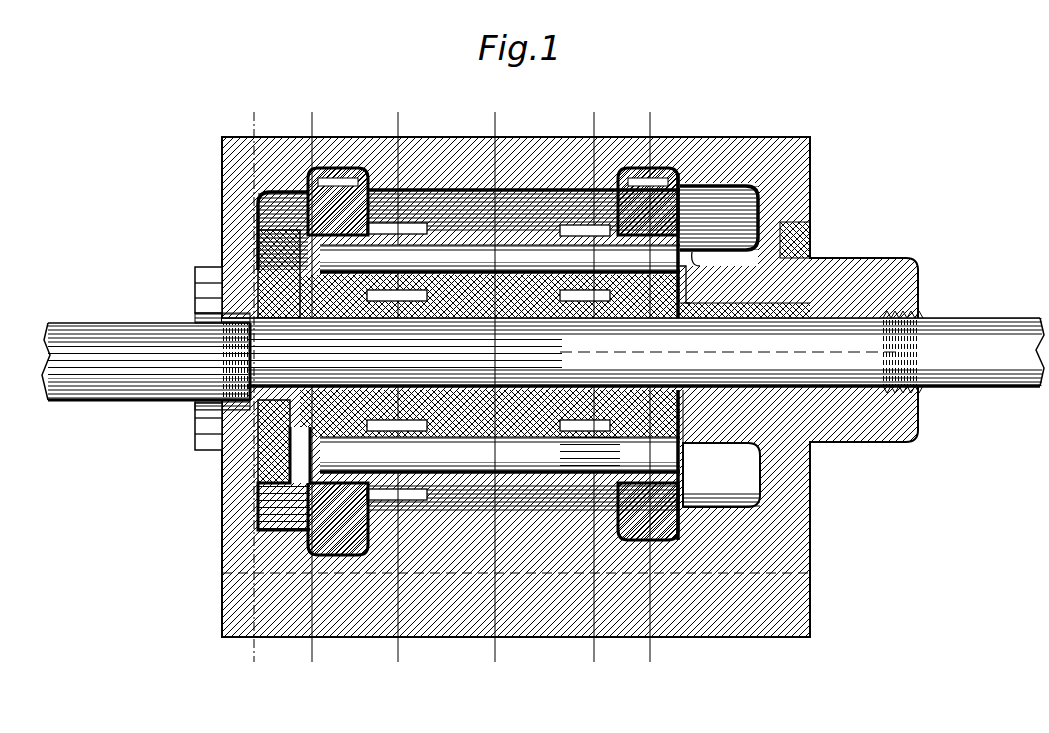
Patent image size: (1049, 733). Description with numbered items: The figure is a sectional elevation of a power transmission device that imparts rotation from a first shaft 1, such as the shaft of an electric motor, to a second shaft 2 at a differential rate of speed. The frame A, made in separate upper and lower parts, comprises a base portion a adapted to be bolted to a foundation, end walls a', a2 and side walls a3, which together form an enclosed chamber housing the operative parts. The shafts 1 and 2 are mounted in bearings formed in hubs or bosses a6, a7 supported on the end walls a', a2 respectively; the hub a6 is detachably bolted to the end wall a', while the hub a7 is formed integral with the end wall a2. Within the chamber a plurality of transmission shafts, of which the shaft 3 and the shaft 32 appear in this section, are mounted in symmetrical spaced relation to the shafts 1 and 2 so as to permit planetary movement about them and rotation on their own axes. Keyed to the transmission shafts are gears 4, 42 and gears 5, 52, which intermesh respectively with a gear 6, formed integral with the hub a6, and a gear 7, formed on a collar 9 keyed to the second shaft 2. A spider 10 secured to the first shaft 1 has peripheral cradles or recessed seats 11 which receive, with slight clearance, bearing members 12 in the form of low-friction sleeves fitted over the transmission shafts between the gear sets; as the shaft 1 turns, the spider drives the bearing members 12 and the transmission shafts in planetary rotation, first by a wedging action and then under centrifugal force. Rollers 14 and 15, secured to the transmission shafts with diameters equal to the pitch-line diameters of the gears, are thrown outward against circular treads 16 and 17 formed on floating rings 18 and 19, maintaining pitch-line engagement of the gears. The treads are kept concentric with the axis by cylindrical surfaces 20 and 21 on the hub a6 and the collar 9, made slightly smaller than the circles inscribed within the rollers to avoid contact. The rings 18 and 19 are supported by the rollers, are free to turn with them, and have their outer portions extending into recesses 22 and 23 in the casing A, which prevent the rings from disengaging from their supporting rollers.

The shaft 1 is at (80, 401).
The shaft 2 is at (261, 114).
The transmission shaft 3 is at (319, 114).
The gear 4 is at (405, 114).
The gear 5 is at (502, 114).
The gear 6 is at (601, 114).
The gear 7 is at (657, 114).
The collar 9 is at (670, 352).
The spider 10 is at (570, 454).
The cradle or recessed seat 11 is at (515, 298).
The bearing member 12 is at (447, 240).
The roller 14 is at (262, 228).
The roller 15 is at (677, 237).
The circular tread 16 is at (362, 190).
The circular tread 17 is at (634, 228).
The floating ring 18 is at (265, 190).
The floating ring 19 is at (690, 180).
The cylindrical surface 20 is at (347, 320).
The cylindrical surface 21 is at (620, 352).
The recess 22 is at (333, 168).
The recess 23 is at (662, 168).
The transmission shaft 32 is at (500, 454).
The gear 42 is at (418, 499).
The gear 52 is at (590, 499).
The frame A is at (812, 152).
The base portion a is at (516, 614).
The end wall a' is at (243, 478).
The end wall a2 is at (812, 492).
The side wall a3 is at (522, 150).
The bearing hub or boss a6 is at (224, 270).
The bearing hub or boss a7 is at (888, 252).